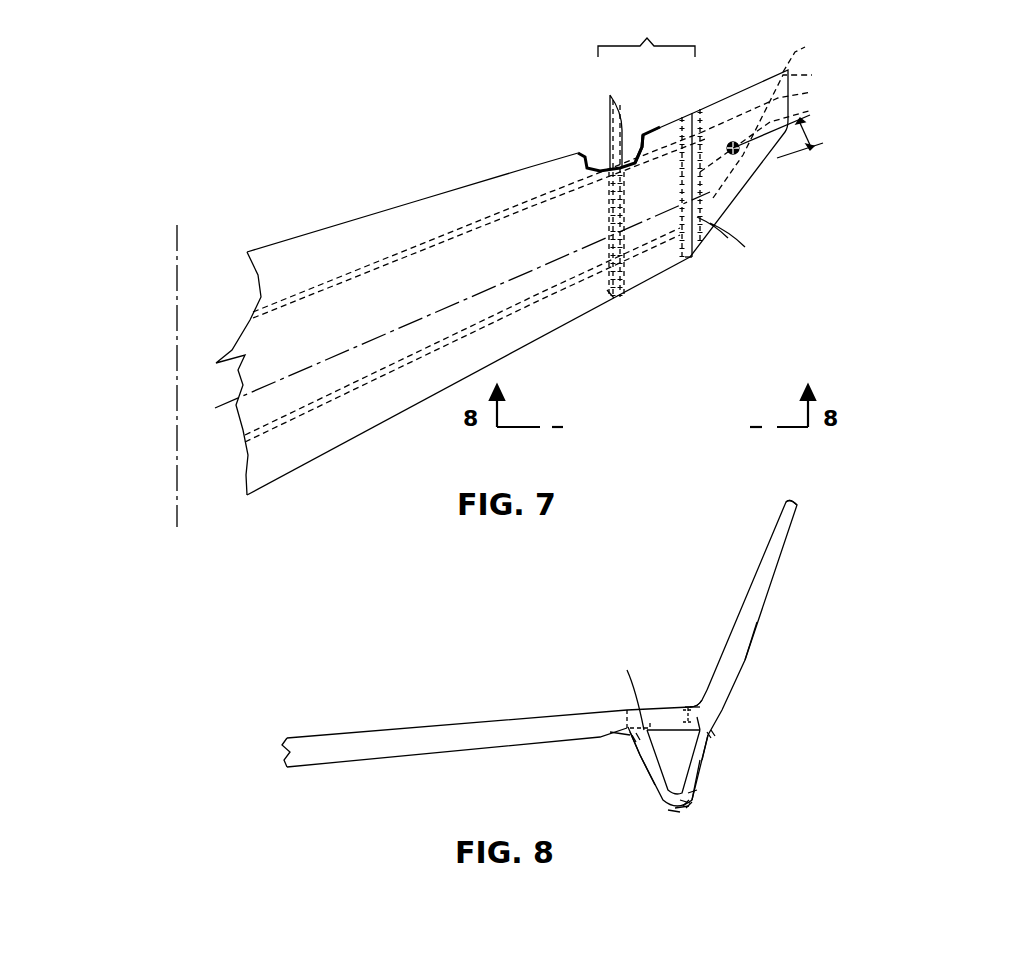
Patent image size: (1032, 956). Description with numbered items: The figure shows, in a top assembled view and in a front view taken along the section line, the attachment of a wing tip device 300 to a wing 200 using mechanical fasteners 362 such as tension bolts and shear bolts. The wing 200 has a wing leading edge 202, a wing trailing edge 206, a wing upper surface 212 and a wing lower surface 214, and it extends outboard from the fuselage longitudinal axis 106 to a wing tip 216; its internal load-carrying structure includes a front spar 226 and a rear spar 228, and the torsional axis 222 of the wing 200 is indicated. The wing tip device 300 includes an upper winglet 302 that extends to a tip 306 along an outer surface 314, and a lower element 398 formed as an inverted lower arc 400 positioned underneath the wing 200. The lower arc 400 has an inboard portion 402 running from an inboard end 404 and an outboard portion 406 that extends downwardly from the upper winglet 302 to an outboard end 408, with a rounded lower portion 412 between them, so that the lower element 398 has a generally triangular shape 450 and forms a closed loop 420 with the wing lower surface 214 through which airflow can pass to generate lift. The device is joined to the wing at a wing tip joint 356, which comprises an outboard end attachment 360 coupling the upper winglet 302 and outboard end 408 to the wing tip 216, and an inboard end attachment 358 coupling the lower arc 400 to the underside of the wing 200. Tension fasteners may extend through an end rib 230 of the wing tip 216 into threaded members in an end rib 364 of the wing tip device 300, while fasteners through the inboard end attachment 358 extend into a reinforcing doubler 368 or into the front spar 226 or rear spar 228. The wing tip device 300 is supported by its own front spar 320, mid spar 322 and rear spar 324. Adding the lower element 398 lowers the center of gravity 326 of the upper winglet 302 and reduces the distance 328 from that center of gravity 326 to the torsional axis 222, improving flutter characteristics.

In FIG. 7, the longitudinal axis 106 is at (176, 300).
In FIG. 7, the wing 200 is at (253, 168).
In FIG. 8, the wing 200 is at (350, 730).
In FIG. 7, the wing leading edge 202 is at (380, 423).
In FIG. 7, the wing trailing edge 206 is at (362, 215).
In FIG. 8, the wing upper surface 212 is at (422, 728).
In FIG. 8, the wing lower surface 214 is at (387, 757).
In FIG. 7, the wing tip 216 is at (680, 117).
In FIG. 8, the wing tip 216 is at (683, 717).
In FIG. 7, the torsional axis 222 is at (782, 158).
In FIG. 7, the front spar 226 is at (525, 306).
In FIG. 7, the rear spar 228 is at (478, 222).
In FIG. 7, the end rib 230 is at (685, 259).
In FIG. 7, the wing tip device 300 is at (928, 68).
In FIG. 8, the wing tip device 300 is at (915, 508).
In FIG. 7, the upper winglet 302 is at (742, 203).
In FIG. 8, the upper winglet 302 is at (778, 577).
In FIG. 7, the tip 306 is at (785, 130).
In FIG. 8, the tip 306 is at (795, 502).
In FIG. 8, the outer surface 314 is at (758, 625).
In FIG. 7, the front spar 320 is at (779, 137).
In FIG. 7, the mid spar 322 is at (779, 108).
In FIG. 7, the rear spar 324 is at (812, 52).
In FIG. 7, the center of gravity 326 is at (733, 140).
In FIG. 7, the distance 328 is at (815, 137).
In FIG. 7, the wing tip joint 356 is at (646, 36).
In FIG. 8, the wing tip joint 356 is at (690, 707).
In FIG. 7, the inboard end attachment 358 is at (606, 143).
In FIG. 8, the inboard end attachment 358 is at (622, 715).
In FIG. 7, the outboard end attachment 360 is at (693, 260).
In FIG. 8, the outboard end attachment 360 is at (698, 717).
In FIG. 7, the mechanical fasteners 362 is at (748, 242).
In FIG. 8, the mechanical fasteners 362 is at (753, 737).
In FIG. 7, the end rib 364 is at (695, 243).
In FIG. 8, the end rib 364 is at (700, 703).
In FIG. 7, the reinforcing doubler 368 is at (610, 297).
In FIG. 8, the reinforcing doubler 368 is at (630, 735).
In FIG. 7, the lower element 398 is at (598, 153).
In FIG. 8, the lower element 398 is at (655, 801).
In FIG. 7, the lower arc 400 is at (643, 130).
In FIG. 8, the lower arc 400 is at (698, 805).
In FIG. 8, the inboard portion 402 is at (643, 770).
In FIG. 8, the inboard end 404 is at (633, 748).
In FIG. 8, the outboard portion 406 is at (707, 772).
In FIG. 8, the outboard end 408 is at (713, 733).
In FIG. 8, the rounded lower portion 412 is at (687, 806).
In FIG. 8, the closed loop 420 is at (698, 787).
In FIG. 8, the triangular shape 450 is at (675, 813).